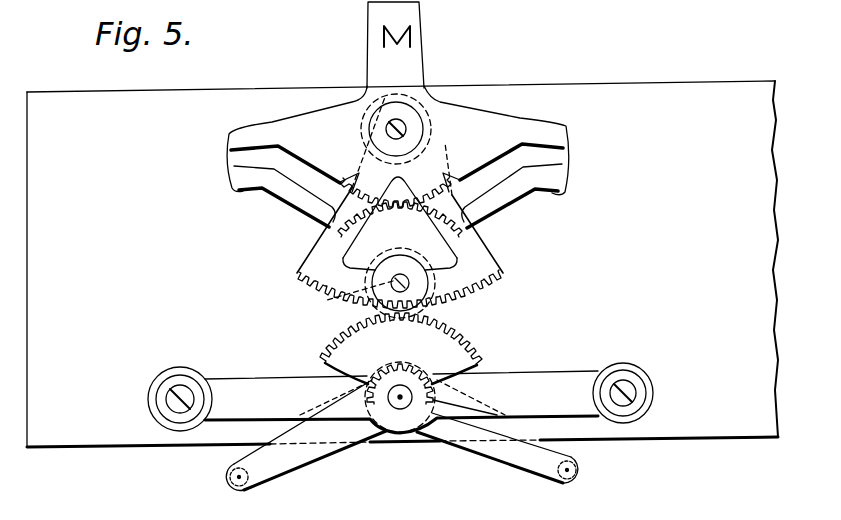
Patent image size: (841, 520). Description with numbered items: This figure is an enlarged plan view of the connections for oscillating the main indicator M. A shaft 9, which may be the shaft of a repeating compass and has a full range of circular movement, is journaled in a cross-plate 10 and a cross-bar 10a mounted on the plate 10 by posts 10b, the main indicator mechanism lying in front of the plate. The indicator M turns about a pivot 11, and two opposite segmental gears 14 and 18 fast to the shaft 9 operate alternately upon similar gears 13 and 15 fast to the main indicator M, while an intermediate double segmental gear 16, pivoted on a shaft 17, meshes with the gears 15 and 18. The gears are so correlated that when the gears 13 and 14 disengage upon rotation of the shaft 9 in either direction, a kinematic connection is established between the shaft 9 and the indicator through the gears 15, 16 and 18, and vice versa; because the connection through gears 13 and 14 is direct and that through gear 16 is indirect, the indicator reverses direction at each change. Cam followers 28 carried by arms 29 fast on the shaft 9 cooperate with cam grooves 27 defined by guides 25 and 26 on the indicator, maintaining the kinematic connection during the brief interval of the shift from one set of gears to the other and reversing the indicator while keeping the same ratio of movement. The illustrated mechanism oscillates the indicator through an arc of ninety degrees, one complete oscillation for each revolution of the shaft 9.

The shaft 9 is at (396, 389).
The cross-plate 10 is at (711, 95).
The cross-bar 10a is at (558, 377).
The posts 10b is at (173, 394).
The pivot 11 is at (398, 128).
The segmental gear 13 is at (478, 291).
The segmental gear 14 is at (478, 353).
The segmental gear 15 is at (440, 147).
The intermediate double segmental gear 16 is at (437, 253).
The shaft 17 is at (345, 290).
The segmental gear 18 is at (404, 432).
The guide 25 is at (227, 134).
The guide 26 is at (238, 184).
The cam grooves 27 is at (233, 163).
The cam followers 28 is at (232, 483).
The arms 29 is at (322, 453).